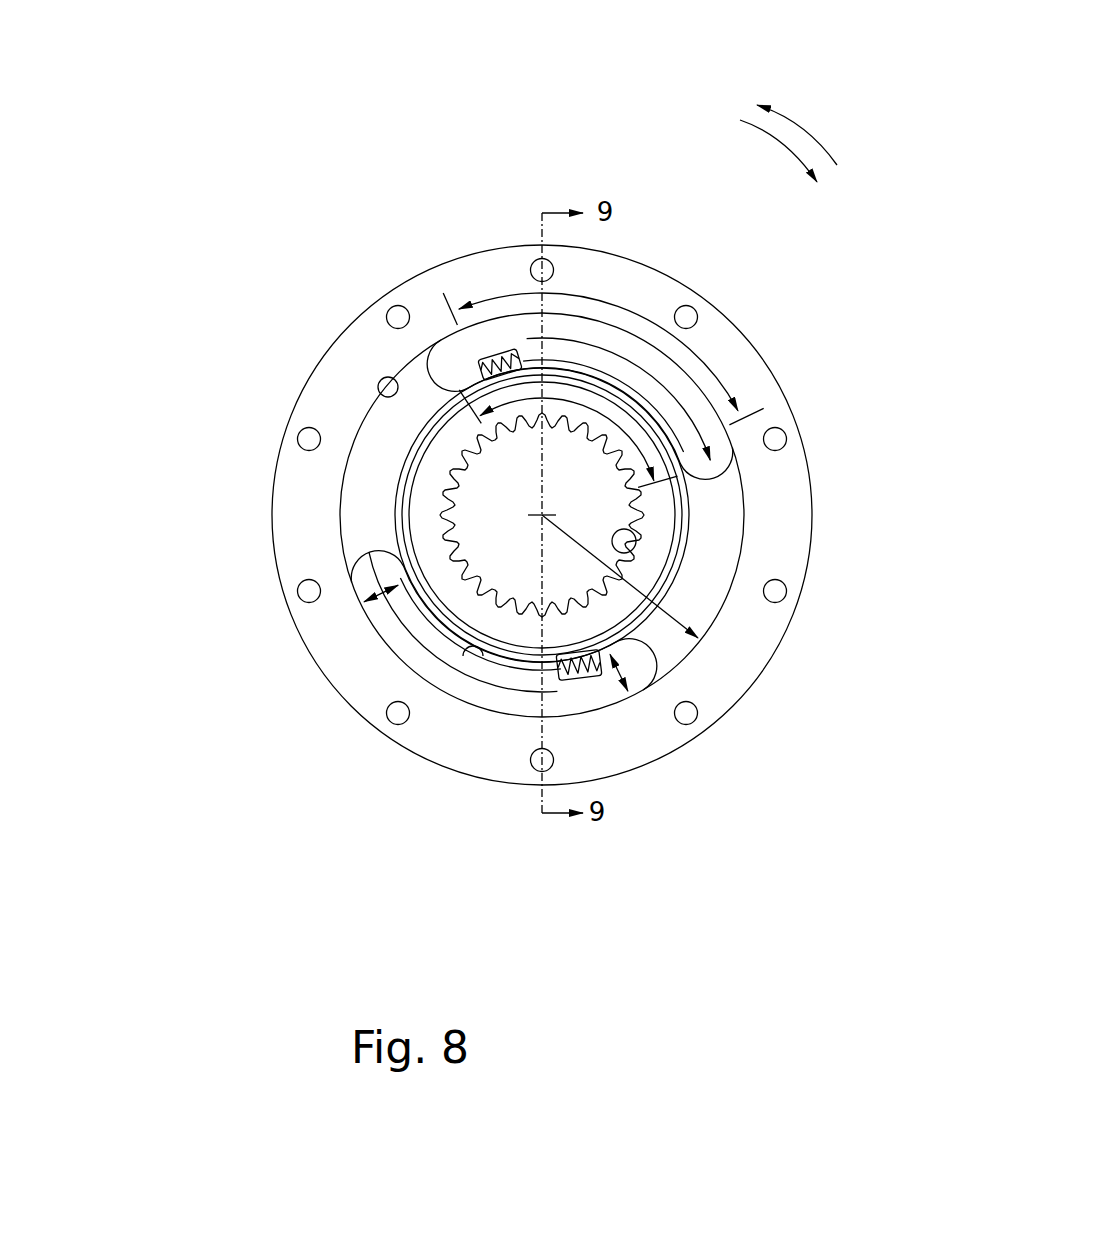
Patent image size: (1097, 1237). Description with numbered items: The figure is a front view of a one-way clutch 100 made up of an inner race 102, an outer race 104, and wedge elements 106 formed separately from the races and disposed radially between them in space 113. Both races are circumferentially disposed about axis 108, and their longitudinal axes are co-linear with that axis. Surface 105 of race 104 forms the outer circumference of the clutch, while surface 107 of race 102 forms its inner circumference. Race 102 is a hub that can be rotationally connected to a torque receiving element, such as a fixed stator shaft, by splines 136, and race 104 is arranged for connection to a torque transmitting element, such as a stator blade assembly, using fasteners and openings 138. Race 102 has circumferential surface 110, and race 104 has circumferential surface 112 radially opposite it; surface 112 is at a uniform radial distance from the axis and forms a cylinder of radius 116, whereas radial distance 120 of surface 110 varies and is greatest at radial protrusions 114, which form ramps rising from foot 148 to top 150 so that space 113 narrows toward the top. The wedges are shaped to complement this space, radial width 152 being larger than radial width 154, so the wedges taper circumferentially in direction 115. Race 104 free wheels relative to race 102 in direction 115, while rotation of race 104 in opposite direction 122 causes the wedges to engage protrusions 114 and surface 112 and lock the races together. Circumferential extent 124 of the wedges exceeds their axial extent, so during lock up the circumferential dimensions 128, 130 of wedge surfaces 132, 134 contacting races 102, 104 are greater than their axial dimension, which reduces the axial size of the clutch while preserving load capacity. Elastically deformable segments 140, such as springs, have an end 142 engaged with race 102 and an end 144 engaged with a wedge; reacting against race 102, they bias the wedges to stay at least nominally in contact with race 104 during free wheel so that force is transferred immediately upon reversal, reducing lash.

The one-way clutch 100 is at (627, 128).
The inner race 102 is at (668, 510).
The outer race 104 is at (342, 320).
The surface 105 is at (295, 630).
The wedge element 106 is at (370, 640).
The surface 107 is at (617, 555).
The axis 108 is at (538, 513).
The circumferential surface 110 is at (390, 513).
The circumferential surface 112 is at (388, 377).
The space 113 is at (360, 472).
The radial protrusion 114 is at (520, 650).
The rotational direction 115 is at (797, 125).
The radius 116 is at (545, 633).
The radial distance 120 is at (545, 624).
The rotational direction 122 is at (777, 147).
The circumferential extent 124 is at (487, 342).
The circumferential dimension 128 is at (600, 295).
The circumferential dimension 130 is at (568, 436).
The surface 132 is at (407, 663).
The surface 134 is at (477, 663).
The splines 136 is at (635, 532).
The openings 138 is at (395, 306).
The elastically deformable segment 140 is at (568, 668).
The end 142 is at (560, 664).
The end 144 is at (698, 638).
The foot 148 is at (402, 452).
The top 150 is at (527, 348).
The radial width 152 is at (363, 550).
The radial width 154 is at (600, 650).